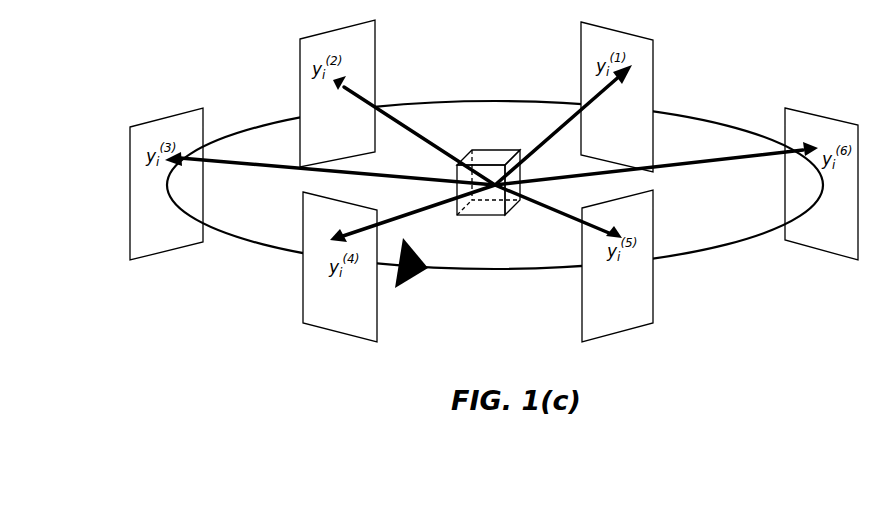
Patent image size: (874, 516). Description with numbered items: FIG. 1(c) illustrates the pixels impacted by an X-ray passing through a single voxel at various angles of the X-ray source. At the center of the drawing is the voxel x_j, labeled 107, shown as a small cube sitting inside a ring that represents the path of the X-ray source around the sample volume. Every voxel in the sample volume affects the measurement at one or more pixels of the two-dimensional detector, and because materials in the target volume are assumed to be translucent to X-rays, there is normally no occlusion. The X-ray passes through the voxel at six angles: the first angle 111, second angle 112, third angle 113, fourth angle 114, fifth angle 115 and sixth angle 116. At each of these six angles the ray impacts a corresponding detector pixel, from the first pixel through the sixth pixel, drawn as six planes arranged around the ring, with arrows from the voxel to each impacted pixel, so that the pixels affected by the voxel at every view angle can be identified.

The object point x_j 107 is at (494, 118).
The first angle 111 is at (617, 92).
The second angle 112 is at (337, 90).
The third angle 113 is at (166, 179).
The fourth angle 114 is at (340, 275).
The fifth angle 115 is at (618, 271).
The sixth angle 116 is at (821, 192).